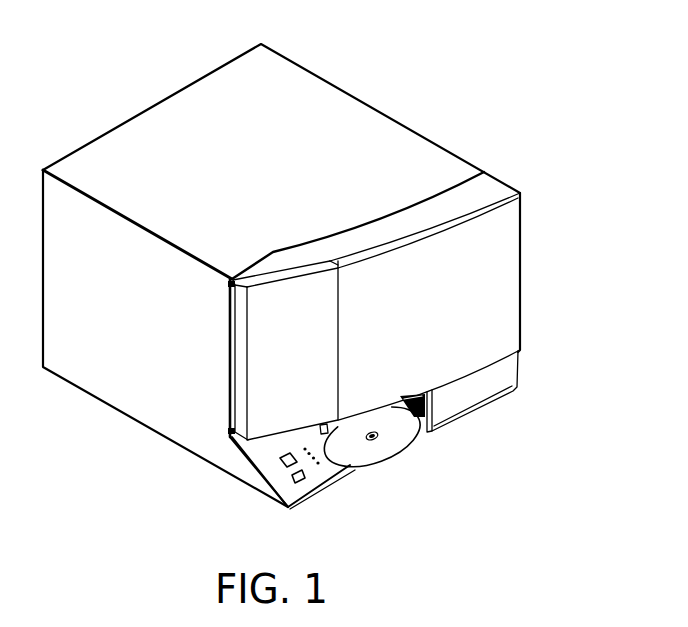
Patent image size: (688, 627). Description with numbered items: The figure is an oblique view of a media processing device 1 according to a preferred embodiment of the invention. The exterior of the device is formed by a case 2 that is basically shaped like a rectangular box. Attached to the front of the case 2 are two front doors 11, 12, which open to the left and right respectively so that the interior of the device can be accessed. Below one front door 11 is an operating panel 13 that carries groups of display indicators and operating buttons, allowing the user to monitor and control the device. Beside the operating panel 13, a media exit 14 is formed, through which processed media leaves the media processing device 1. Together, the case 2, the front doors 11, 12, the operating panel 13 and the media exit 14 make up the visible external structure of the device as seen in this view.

The media processing device 1 is at (343, 79).
The case 2 is at (357, 136).
The front door 11 is at (273, 377).
The front door 12 is at (505, 292).
The operating panel 13 is at (283, 477).
The media exit 14 is at (353, 443).